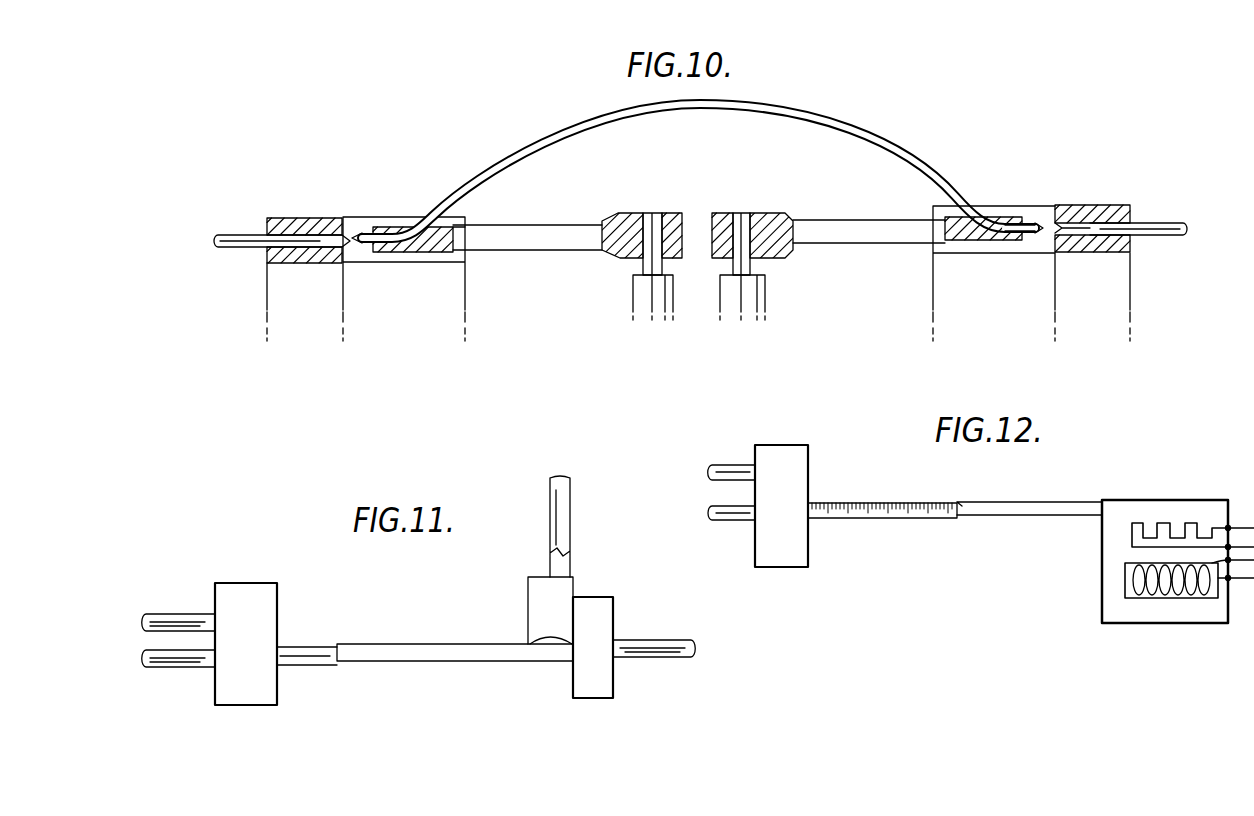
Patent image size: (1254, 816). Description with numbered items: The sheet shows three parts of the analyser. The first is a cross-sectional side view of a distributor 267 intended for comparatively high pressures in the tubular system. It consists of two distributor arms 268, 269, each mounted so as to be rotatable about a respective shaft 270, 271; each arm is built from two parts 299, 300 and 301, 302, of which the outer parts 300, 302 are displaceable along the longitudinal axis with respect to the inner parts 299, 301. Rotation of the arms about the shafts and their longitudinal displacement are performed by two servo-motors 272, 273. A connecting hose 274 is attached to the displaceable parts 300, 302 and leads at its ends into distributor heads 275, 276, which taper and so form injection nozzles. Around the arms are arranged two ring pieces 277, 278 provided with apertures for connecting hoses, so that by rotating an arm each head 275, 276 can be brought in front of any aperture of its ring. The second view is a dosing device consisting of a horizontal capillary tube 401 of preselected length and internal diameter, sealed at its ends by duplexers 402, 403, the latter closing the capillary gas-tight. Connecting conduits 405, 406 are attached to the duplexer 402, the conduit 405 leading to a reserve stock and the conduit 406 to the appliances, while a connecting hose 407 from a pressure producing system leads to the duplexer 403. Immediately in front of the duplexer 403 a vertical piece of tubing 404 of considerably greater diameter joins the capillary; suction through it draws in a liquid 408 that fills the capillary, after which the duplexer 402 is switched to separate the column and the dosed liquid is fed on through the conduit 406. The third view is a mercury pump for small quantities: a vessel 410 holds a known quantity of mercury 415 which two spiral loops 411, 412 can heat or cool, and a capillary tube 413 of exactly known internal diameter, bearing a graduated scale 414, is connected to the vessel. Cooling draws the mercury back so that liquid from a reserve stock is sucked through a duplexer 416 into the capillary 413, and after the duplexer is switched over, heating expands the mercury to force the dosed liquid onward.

In FIG. 10, the distributor 267 is at (583, 367).
In FIG. 10, the distributor arm 268 is at (425, 262).
In FIG. 10, the distributor arm 269 is at (1003, 253).
In FIG. 10, the shaft 270 is at (652, 213).
In FIG. 10, the shaft 271 is at (740, 213).
In FIG. 10, the servo-motor 272 is at (680, 260).
In FIG. 10, the servo-motor 273 is at (782, 260).
In FIG. 10, the connecting hose 274 is at (886, 148).
In FIG. 10, the distributor head 275 is at (370, 226).
In FIG. 10, the distributor head 276 is at (1027, 217).
In FIG. 10, the ring piece 277 is at (305, 218).
In FIG. 10, the ring piece 278 is at (1082, 205).
In FIG. 10, the arm part 299 is at (608, 213).
In FIG. 10, the arm part 300 is at (534, 224).
In FIG. 10, the arm part 301 is at (780, 213).
In FIG. 10, the arm part 302 is at (858, 220).
In FIG. 11, the capillary tube 401 is at (325, 666).
In FIG. 11, the duplexer 402 is at (268, 705).
In FIG. 11, the duplexer 403 is at (592, 698).
In FIG. 11, the piece of tubing 404 is at (556, 602).
In FIG. 11, the connecting conduit 405 is at (168, 667).
In FIG. 11, the connecting conduit 406 is at (170, 614).
In FIG. 11, the connecting hose 407 is at (650, 658).
In FIG. 11, the liquid 408 is at (450, 661).
In FIG. 12, the vessel 410 is at (1100, 600).
In FIG. 12, the spiral loop 411 is at (1191, 523).
In FIG. 12, the spiral loop 412 is at (1214, 598).
In FIG. 12, the capillary tube 413 is at (984, 502).
In FIG. 12, the graduated scale 414 is at (872, 485).
In FIG. 12, the mercury 415 is at (1066, 508).
In FIG. 12, the duplexer 416 is at (796, 567).